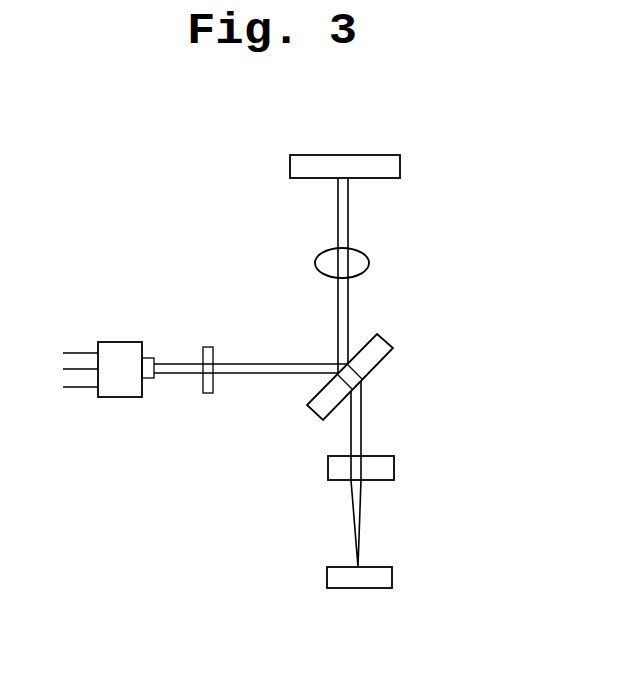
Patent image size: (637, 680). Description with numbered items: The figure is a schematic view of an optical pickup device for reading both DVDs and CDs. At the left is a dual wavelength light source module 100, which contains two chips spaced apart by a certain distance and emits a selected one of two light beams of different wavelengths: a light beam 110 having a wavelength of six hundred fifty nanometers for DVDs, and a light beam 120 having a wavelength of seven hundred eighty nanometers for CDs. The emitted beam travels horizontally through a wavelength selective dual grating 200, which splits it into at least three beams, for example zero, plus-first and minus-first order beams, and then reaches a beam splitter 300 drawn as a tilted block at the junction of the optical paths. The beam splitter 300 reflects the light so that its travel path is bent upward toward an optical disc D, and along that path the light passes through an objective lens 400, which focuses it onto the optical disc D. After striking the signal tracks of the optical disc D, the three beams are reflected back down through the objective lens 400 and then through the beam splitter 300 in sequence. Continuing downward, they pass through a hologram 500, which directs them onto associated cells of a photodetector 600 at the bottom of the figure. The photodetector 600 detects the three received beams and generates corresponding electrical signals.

The dual wavelength light source module 100 is at (122, 340).
The wavelength selective dual grating 200 is at (208, 345).
The light beam 110 is at (258, 360).
The light beam 120 is at (270, 377).
The beam splitter 300 is at (392, 340).
The objective lens 400 is at (369, 262).
The optical disc D is at (400, 166).
The hologram 500 is at (394, 467).
The photodetector 600 is at (392, 578).